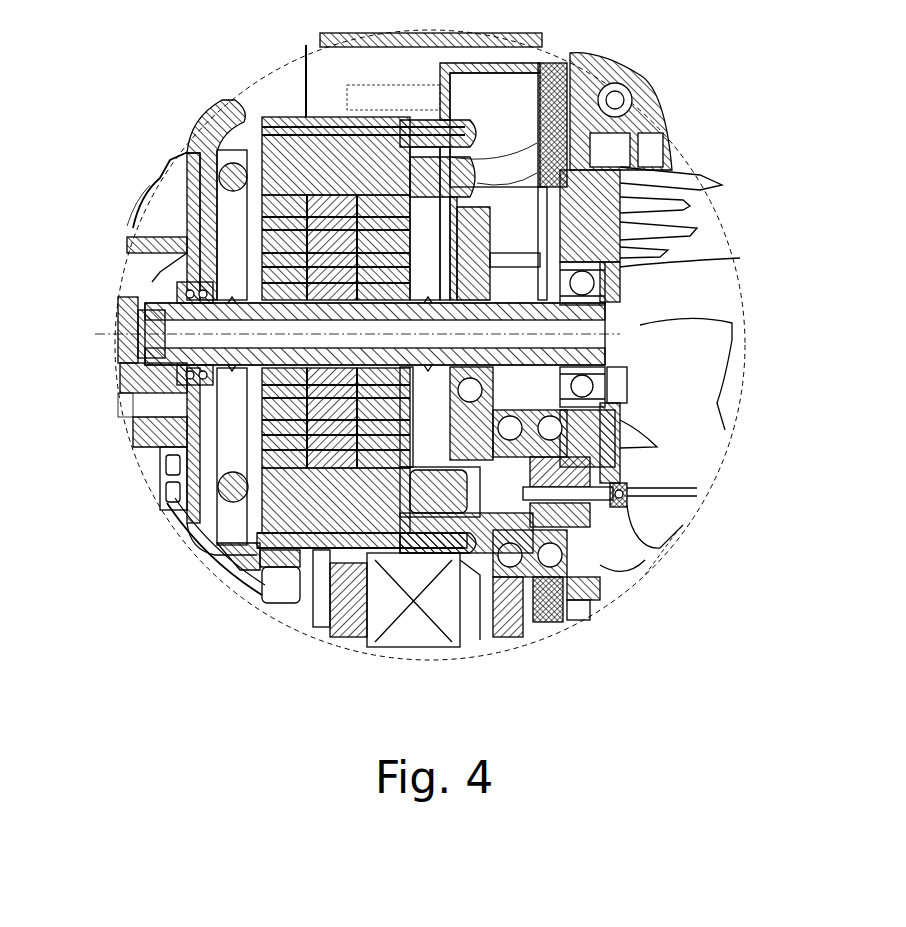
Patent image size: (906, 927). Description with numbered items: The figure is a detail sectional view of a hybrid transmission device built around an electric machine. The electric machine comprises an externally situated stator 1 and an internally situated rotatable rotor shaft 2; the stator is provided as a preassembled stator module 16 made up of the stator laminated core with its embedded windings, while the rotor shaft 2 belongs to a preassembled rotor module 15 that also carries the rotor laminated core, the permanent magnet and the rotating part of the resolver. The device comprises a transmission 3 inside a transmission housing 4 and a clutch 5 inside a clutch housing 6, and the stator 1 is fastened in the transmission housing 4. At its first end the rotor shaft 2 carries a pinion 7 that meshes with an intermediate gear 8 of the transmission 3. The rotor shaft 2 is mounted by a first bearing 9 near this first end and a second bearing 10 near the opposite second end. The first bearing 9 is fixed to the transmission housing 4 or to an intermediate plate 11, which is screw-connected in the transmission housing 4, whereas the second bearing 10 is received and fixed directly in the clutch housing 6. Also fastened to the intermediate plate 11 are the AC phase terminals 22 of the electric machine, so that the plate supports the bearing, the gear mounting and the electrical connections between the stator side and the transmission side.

The stator 1 is at (305, 319).
The stator module 16 is at (282, 160).
The rotor shaft 2 is at (120, 273).
The rotor module 15 is at (182, 292).
The AC phase terminals 22 is at (617, 145).
The transmission housing 4 is at (600, 188).
The first bearing 9 is at (605, 272).
The pinion 7 is at (612, 402).
The intermediate plate 11 is at (462, 537).
The intermediate gear 8 is at (530, 562).
The transmission 3 is at (513, 633).
The clutch housing 6 is at (137, 382).
The second bearing 10 is at (193, 375).
The clutch 5 is at (173, 477).